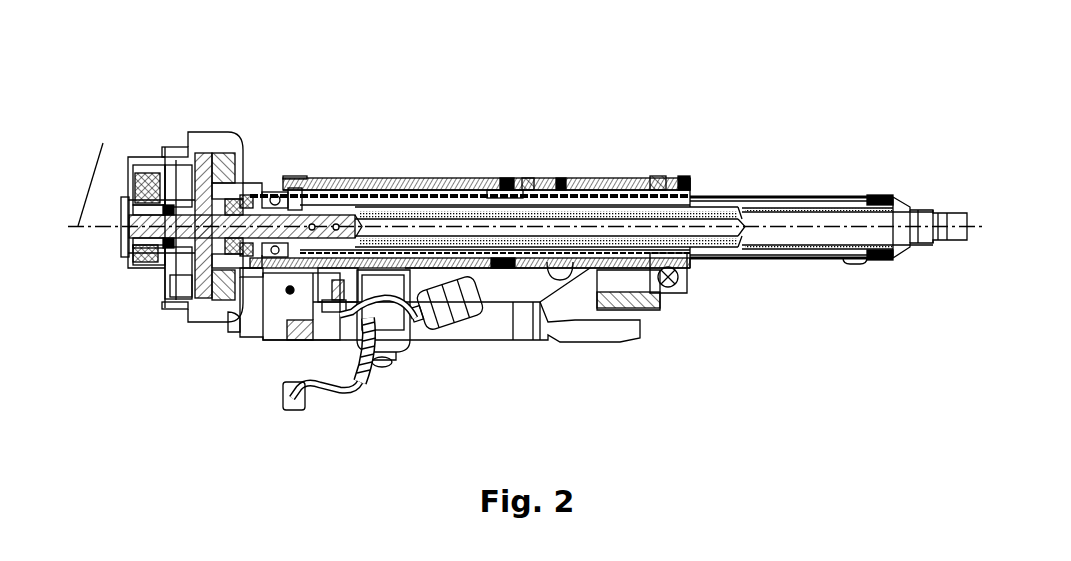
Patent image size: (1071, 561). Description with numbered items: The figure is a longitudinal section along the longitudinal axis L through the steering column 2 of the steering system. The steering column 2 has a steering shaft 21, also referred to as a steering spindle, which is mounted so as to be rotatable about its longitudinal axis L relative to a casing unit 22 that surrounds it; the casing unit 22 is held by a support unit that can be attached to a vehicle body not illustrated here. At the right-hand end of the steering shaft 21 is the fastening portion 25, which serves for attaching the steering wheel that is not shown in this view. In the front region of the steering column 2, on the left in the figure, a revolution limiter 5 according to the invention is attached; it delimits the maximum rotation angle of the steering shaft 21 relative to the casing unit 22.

The steering column 2 is at (718, 92).
The revolution limiter 5 is at (190, 130).
The steering shaft 21 is at (276, 190).
The casing unit 22 is at (508, 185).
The fastening portion 25 is at (955, 210).